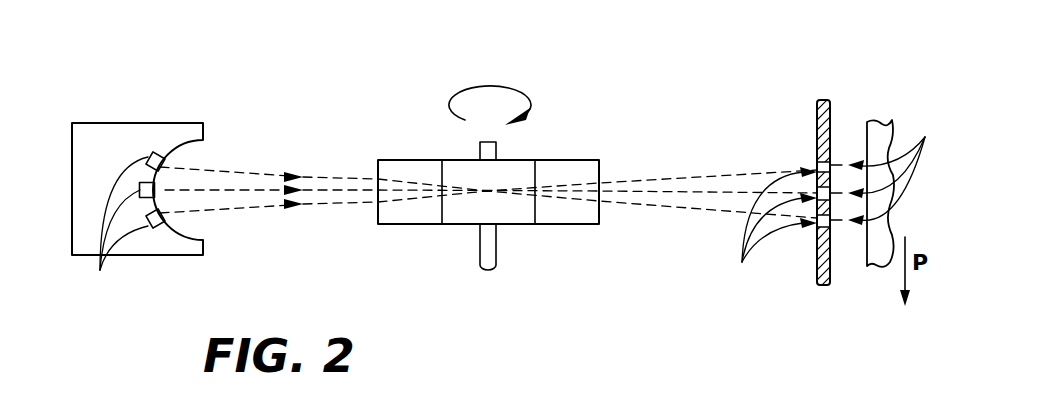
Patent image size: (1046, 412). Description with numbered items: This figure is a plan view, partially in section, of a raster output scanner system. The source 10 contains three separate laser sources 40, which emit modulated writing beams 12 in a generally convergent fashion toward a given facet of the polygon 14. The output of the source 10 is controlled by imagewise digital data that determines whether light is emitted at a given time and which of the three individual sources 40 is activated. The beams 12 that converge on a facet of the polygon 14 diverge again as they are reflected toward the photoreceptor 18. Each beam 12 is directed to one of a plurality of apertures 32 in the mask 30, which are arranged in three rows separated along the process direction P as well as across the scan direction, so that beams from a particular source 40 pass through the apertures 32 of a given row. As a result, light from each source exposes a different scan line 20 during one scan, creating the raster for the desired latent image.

The source 10 is at (131, 123).
The laser sources 40 is at (117, 229).
The writing beams 12 is at (233, 172).
The polygon 14 is at (417, 225).
The mask 30 is at (827, 98).
The apertures 32 is at (773, 232).
The photoreceptor 18 is at (884, 123).
The scan lines 20 is at (897, 166).